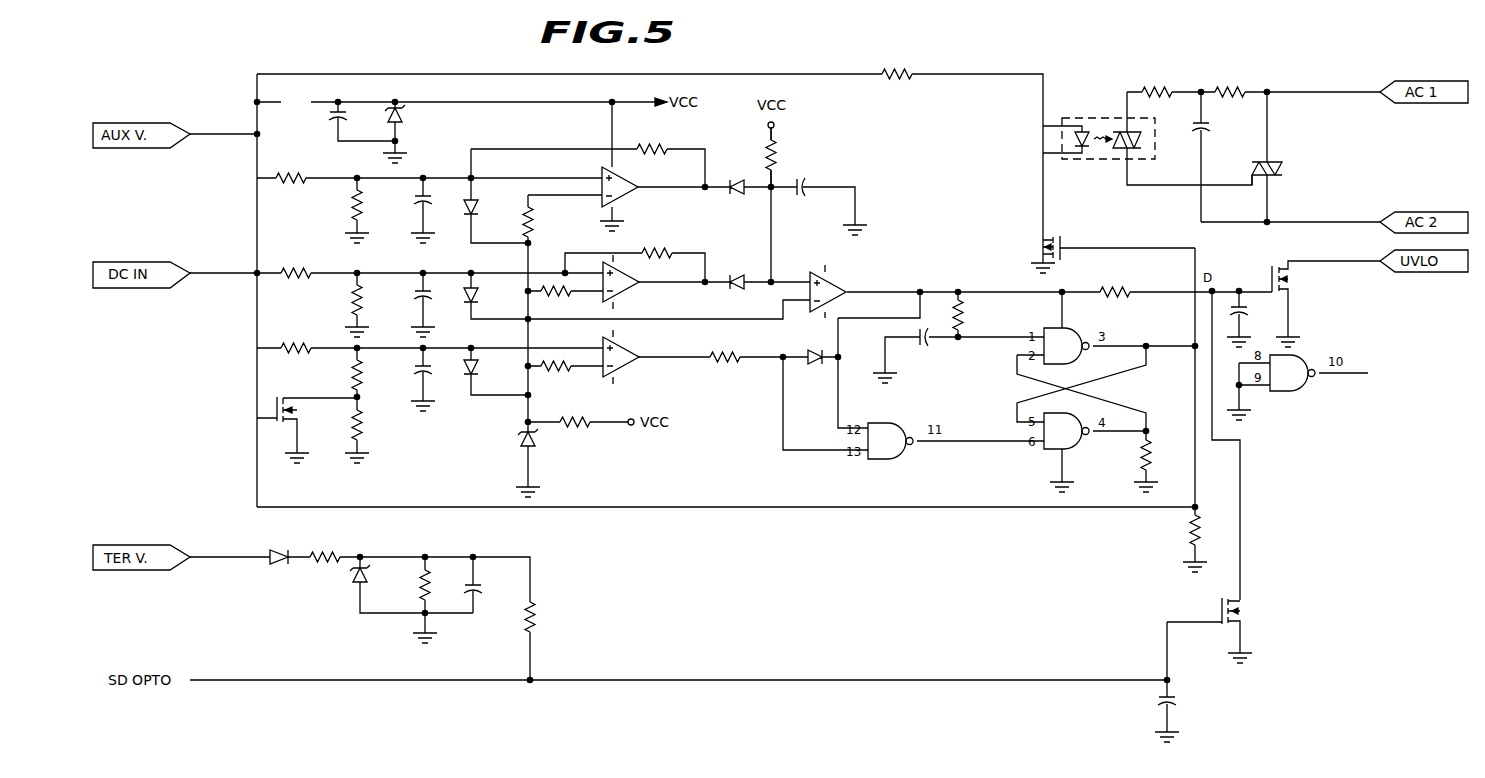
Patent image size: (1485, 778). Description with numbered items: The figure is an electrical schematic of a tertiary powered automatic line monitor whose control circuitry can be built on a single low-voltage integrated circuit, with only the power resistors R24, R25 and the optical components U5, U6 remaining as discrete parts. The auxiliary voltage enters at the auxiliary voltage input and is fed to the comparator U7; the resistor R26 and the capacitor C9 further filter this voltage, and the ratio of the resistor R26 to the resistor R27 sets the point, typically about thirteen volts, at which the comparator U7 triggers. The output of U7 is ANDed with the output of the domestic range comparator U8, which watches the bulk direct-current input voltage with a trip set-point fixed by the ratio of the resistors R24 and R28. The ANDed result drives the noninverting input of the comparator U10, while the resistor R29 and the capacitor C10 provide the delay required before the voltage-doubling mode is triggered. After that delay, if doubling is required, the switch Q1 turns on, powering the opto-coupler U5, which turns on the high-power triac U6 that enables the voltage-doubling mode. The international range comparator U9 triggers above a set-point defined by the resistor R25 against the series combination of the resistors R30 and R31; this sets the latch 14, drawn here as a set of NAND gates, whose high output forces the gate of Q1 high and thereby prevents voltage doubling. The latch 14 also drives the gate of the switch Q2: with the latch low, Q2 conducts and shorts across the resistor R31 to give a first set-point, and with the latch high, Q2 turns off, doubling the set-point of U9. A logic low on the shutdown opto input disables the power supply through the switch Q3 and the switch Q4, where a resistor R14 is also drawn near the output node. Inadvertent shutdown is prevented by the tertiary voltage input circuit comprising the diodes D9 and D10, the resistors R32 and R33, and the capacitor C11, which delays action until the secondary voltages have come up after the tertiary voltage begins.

The resistor R27 is at (291, 168).
The resistor R26 is at (342, 210).
The capacitor C9 is at (413, 210).
The power resistor R24 is at (297, 261).
The resistor R28 is at (369, 305).
The power resistor R25 is at (297, 337).
The resistor R30 is at (336, 372).
The resistor R31 is at (370, 430).
The switch Q2 is at (296, 430).
The comparator U7 is at (620, 185).
The resistor R29 is at (787, 157).
The capacitor C10 is at (798, 198).
The comparator U8 is at (617, 284).
The comparator U9 is at (623, 359).
The comparator U10 is at (829, 282).
The latch 14 is at (1010, 374).
The switch Q1 is at (1101, 252).
The opto-coupler U5 is at (1055, 117).
The high-power triac U6 is at (1271, 157).
The switch Q4 is at (1309, 304).
The resistor R14 (1 M) R14 is at (1175, 539).
The switch Q3 is at (1209, 630).
The diode D9 is at (276, 544).
The resistor R32 is at (325, 545).
The diode D10 is at (336, 579).
The resistor R33 is at (407, 600).
The capacitor C11 is at (489, 579).